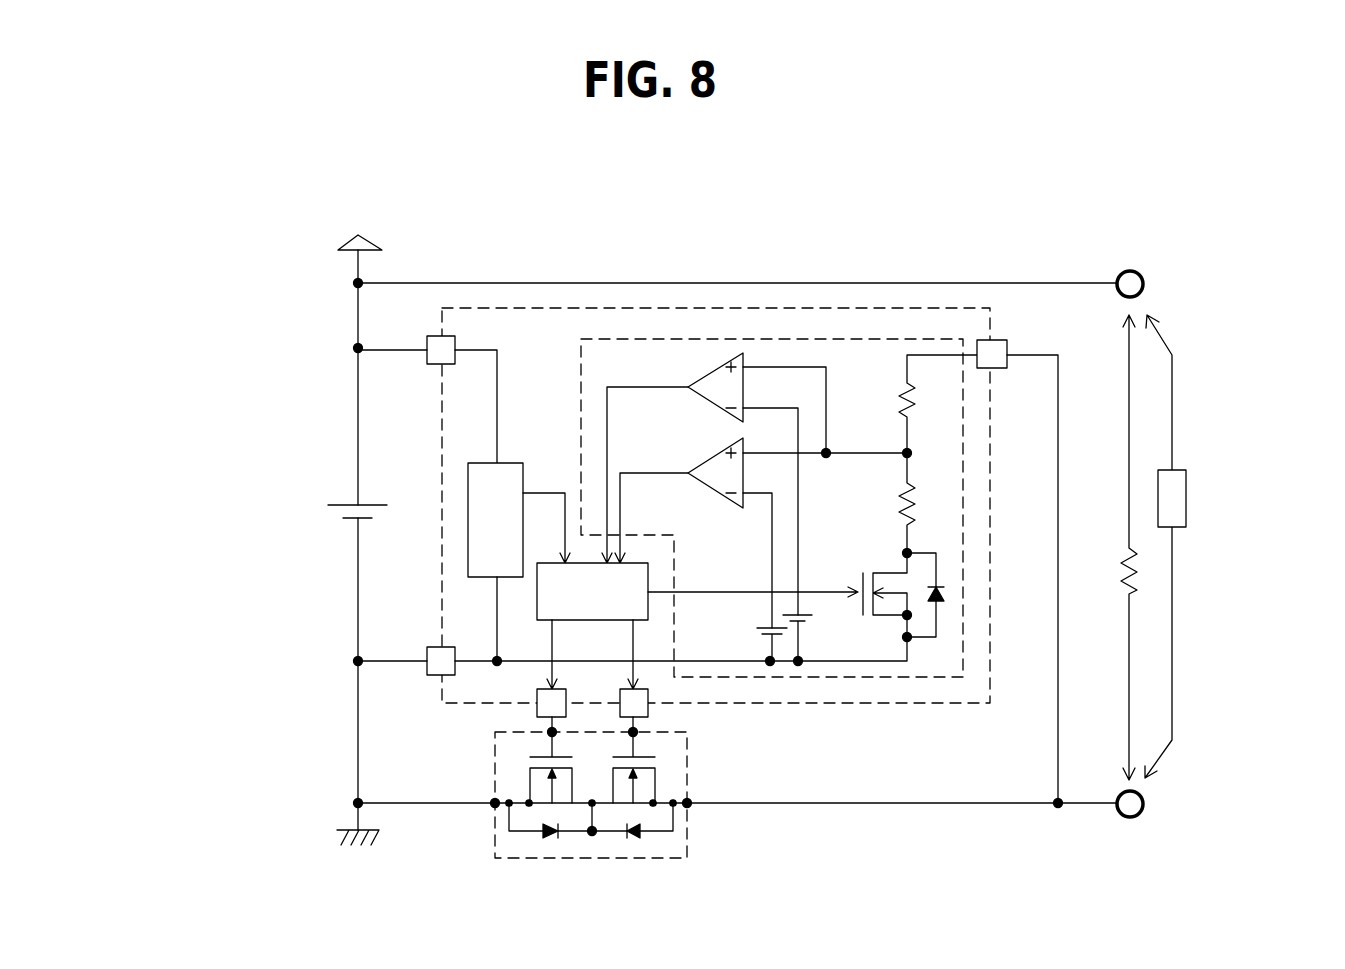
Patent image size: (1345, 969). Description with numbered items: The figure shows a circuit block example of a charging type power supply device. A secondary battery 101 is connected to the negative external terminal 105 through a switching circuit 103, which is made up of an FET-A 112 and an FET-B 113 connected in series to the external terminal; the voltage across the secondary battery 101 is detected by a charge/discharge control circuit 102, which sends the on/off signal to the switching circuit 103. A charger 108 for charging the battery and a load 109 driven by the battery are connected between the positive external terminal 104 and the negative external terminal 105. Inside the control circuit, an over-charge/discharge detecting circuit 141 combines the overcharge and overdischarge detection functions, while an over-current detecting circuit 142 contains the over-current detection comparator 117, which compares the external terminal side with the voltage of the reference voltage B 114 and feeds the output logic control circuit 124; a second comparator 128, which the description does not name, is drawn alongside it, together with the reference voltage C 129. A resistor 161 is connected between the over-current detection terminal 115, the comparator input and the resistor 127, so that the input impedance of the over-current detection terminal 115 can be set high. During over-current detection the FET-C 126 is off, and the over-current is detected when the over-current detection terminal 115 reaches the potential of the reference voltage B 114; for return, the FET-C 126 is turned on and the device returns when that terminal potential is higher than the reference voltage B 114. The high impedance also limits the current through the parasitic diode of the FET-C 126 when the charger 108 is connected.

The secondary battery 101 is at (328, 520).
The charge/discharge control circuit 102 is at (453, 702).
The switching circuit 103 is at (583, 806).
The external terminal +V0 104 is at (1130, 268).
The external terminal −V0 105 is at (1128, 820).
The charger 108 is at (1183, 530).
The load 109 is at (1140, 598).
The FET-A 112 is at (558, 810).
The FET-B 113 is at (662, 810).
The reference voltage circuit B 114 is at (783, 637).
The over-current detection terminal 115 is at (993, 336).
The over-current detection comparator 117 is at (703, 450).
The output logic control circuit 124 is at (530, 590).
The FET-C 126 is at (893, 623).
The resistor 127 is at (913, 480).
The comparator 128 is at (710, 363).
The reference voltage C 129 is at (812, 622).
The over-charge/discharge detecting circuit 141 is at (460, 475).
The over-current detecting circuit 142 is at (928, 680).
The resistor 161 is at (893, 397).